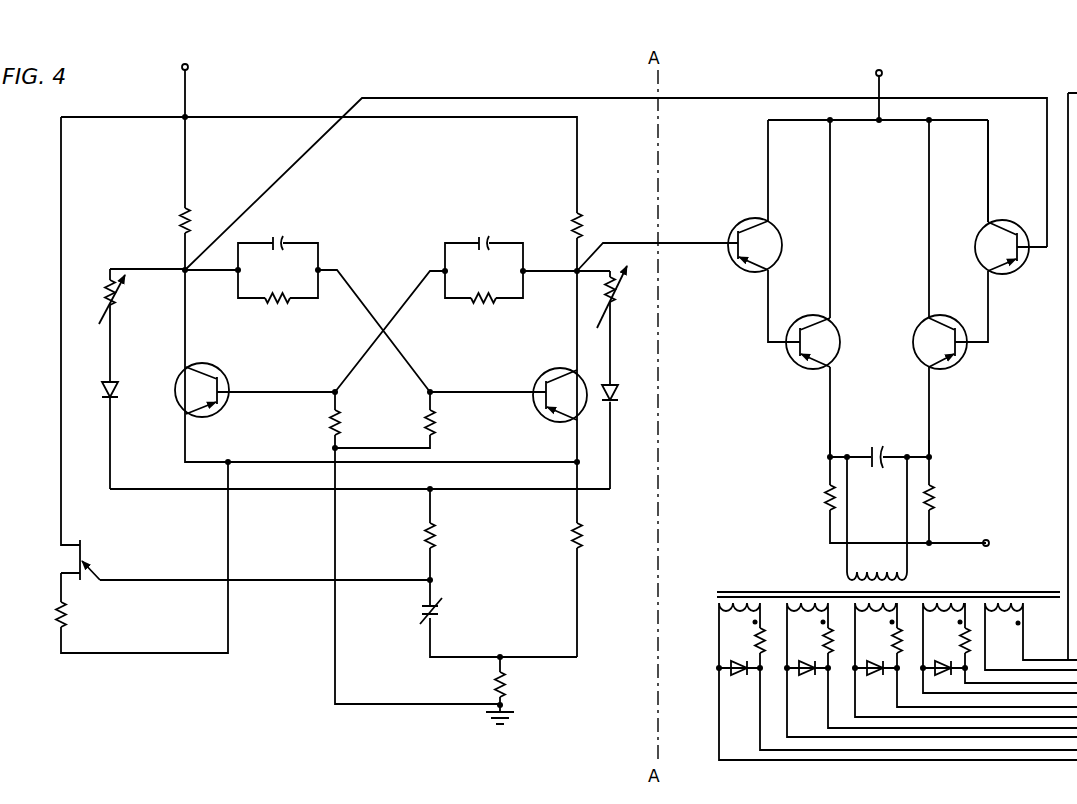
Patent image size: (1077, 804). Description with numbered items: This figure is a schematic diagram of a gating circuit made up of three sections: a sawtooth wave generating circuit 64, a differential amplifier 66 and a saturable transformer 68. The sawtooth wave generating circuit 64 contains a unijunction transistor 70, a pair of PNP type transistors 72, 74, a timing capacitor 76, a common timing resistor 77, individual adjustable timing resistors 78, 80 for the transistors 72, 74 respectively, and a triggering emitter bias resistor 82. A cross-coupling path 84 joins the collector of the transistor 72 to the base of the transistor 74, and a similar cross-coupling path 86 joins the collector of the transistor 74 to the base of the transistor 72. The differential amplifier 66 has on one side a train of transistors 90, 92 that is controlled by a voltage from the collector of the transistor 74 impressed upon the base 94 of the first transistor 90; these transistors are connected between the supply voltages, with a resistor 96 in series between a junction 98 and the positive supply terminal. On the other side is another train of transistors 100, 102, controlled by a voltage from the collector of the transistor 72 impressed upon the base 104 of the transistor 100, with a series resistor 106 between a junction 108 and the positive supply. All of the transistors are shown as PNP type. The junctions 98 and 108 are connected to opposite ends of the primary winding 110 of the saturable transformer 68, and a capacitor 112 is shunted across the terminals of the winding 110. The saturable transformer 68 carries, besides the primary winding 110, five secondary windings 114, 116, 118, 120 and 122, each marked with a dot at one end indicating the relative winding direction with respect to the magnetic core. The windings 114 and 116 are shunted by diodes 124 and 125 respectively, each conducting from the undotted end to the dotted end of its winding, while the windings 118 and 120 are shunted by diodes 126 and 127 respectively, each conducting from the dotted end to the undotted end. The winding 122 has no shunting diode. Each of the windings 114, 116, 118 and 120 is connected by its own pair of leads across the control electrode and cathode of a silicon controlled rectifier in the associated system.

The sawtooth wave generating circuit 64 is at (316, 87).
The differential amplifier 66 is at (806, 93).
The saturable transformer 68 is at (791, 587).
The unijunction transistor 70 is at (78, 556).
The transistor 72 is at (212, 375).
The transistor 74 is at (542, 376).
The timing capacitor 76 is at (440, 612).
The common timing resistor 77 is at (585, 538).
The adjustable timing resistor 78 is at (105, 298).
The adjustable timing resistor 80 is at (613, 310).
The triggering emitter bias resistor 82 is at (506, 690).
The cross-coupling path 84 is at (290, 282).
The cross-coupling path 86 is at (495, 283).
The transistor 90 is at (733, 265).
The transistor 92 is at (795, 357).
The base 94 is at (702, 242).
The resistor 96 is at (822, 500).
The junction 98 is at (826, 457).
The transistor 100 is at (1015, 266).
The transistor 102 is at (958, 362).
The base 104 is at (1032, 240).
The series resistor 106 is at (935, 500).
The junction 108 is at (931, 456).
The primary winding 110 is at (902, 583).
The capacitor 112 is at (884, 430).
The secondary winding 114 is at (740, 602).
The secondary winding 116 is at (813, 600).
The secondary winding 118 is at (888, 610).
The secondary winding 120 is at (960, 602).
The secondary winding 122 is at (1013, 602).
The diode 124 is at (737, 673).
The diode 125 is at (807, 683).
The diode 126 is at (876, 683).
The diode 127 is at (960, 681).